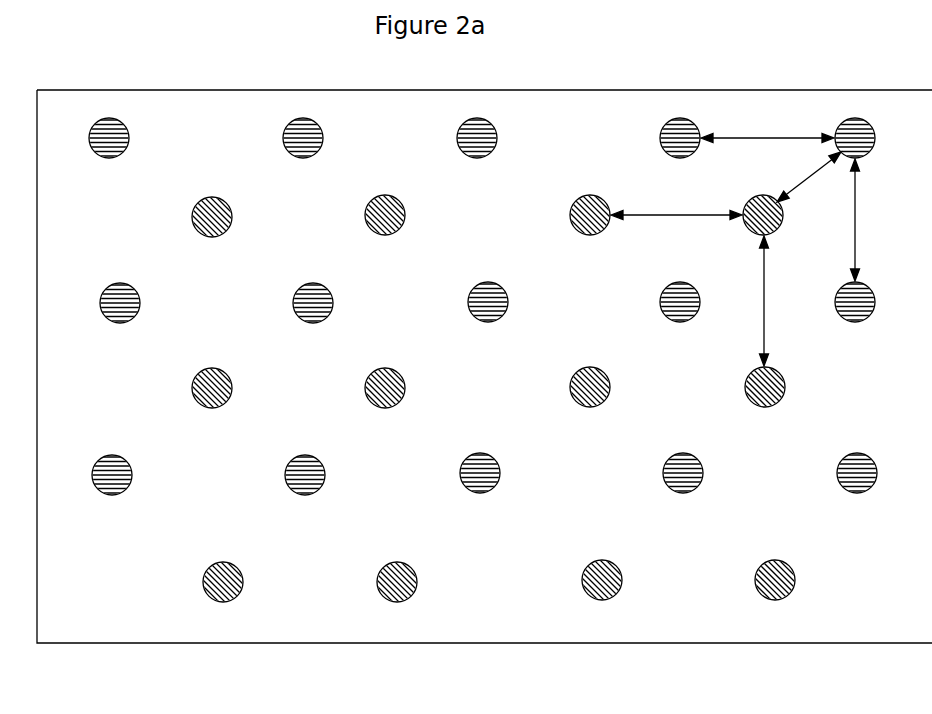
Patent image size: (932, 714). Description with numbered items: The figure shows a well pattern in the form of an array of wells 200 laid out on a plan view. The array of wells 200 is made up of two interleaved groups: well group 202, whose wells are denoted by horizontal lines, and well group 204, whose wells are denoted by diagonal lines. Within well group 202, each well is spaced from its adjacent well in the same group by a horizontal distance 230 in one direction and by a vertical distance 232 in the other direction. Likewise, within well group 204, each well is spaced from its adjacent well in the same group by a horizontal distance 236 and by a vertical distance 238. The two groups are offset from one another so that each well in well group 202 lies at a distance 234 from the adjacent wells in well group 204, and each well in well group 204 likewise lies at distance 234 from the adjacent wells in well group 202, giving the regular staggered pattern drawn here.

The array of wells 200 is at (108, 89).
The well group 202 is at (473, 285).
The well group 204 is at (367, 205).
The horizontal distance 230 is at (767, 129).
The vertical distance 232 is at (865, 220).
The distance 234 is at (809, 176).
The horizontal distance 236 is at (676, 206).
The vertical distance 238 is at (754, 301).